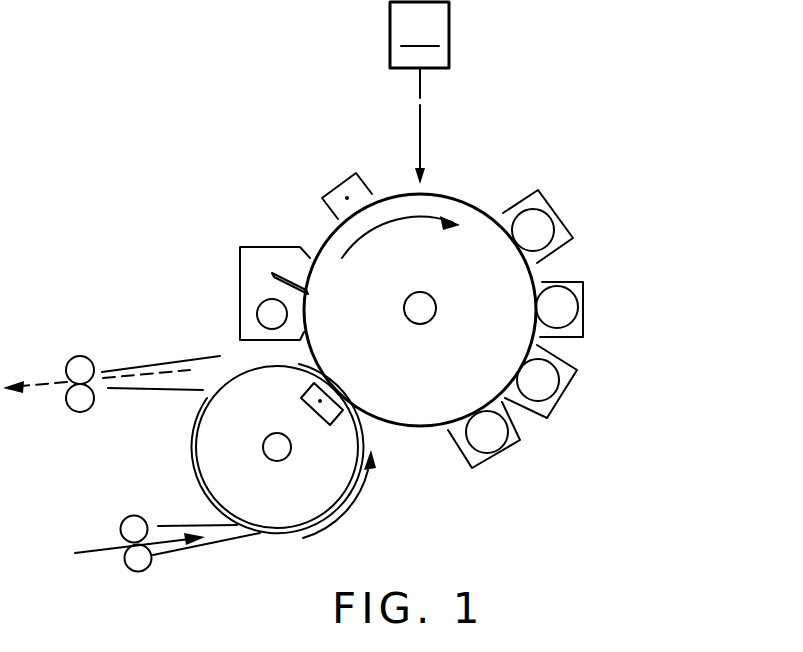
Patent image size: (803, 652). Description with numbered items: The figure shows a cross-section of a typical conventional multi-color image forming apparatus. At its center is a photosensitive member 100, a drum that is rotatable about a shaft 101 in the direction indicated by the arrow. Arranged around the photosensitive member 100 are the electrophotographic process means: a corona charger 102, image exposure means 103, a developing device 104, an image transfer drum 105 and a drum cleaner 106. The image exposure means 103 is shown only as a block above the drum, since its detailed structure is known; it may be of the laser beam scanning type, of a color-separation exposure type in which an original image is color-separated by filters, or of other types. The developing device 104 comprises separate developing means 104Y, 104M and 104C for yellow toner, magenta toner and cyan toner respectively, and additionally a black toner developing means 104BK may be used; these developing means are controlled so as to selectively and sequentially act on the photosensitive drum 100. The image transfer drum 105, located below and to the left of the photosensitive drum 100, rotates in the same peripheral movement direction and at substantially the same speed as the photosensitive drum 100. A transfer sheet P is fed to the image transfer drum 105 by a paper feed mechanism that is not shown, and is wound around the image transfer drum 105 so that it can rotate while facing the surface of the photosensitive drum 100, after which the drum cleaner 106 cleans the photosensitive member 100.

The photosensitive member 100 is at (486, 200).
The shaft 101 is at (450, 337).
The corona charger 102 is at (338, 192).
The image exposure means 103 is at (419, 93).
The developing device 104 is at (590, 186).
The developing means for yellow toner 104Y is at (558, 223).
The developing means for magenta toner 104M is at (565, 310).
The developing means for cyan toner 104C is at (565, 392).
The black toner developing means 104BK is at (507, 452).
The image transfer drum 105 is at (262, 375).
The drum cleaner 106 is at (267, 262).
The transfer sheet P is at (360, 435).